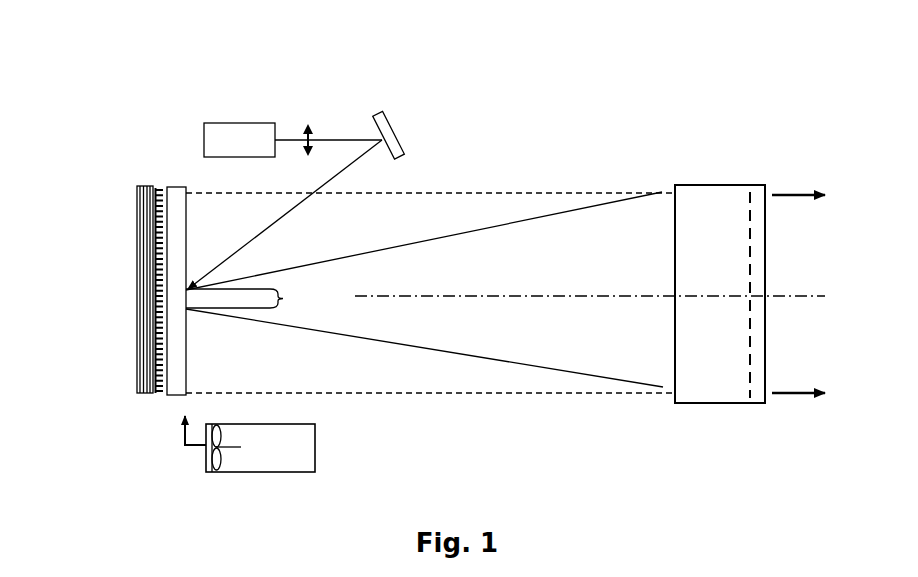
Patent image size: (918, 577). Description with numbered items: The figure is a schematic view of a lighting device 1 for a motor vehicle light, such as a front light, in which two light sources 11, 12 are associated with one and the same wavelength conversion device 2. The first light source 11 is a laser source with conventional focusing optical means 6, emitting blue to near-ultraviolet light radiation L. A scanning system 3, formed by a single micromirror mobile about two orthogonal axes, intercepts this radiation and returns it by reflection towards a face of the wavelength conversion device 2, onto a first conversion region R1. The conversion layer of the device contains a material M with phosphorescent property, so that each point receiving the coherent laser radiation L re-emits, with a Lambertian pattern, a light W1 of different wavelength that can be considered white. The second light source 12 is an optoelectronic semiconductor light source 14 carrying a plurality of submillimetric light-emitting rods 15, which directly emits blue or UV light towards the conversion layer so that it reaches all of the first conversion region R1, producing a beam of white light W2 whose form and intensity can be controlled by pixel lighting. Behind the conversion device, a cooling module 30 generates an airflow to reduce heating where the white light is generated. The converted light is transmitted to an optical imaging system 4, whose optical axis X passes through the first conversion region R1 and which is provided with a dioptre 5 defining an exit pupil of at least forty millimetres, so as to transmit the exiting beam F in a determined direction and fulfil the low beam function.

The lighting device 1 is at (575, 91).
The wavelength conversion device 2 is at (180, 340).
The scanning system 3 is at (390, 126).
The optical imaging system 4 is at (720, 185).
The dioptre 5 is at (748, 205).
The focusing optical means 6 is at (313, 127).
The first light source 11 is at (235, 123).
The second light source 12 is at (150, 400).
The semiconductor light source 14 is at (152, 237).
The light-emitting rods 15 is at (157, 186).
The cooling module 30 is at (235, 470).
The first conversion region R1 is at (259, 297).
The light radiation L is at (335, 188).
The phosphorescent material M is at (175, 367).
The optical axis X is at (570, 297).
The white light W1 is at (528, 367).
The beam of white light W2 is at (422, 395).
The exiting beam F is at (790, 188).